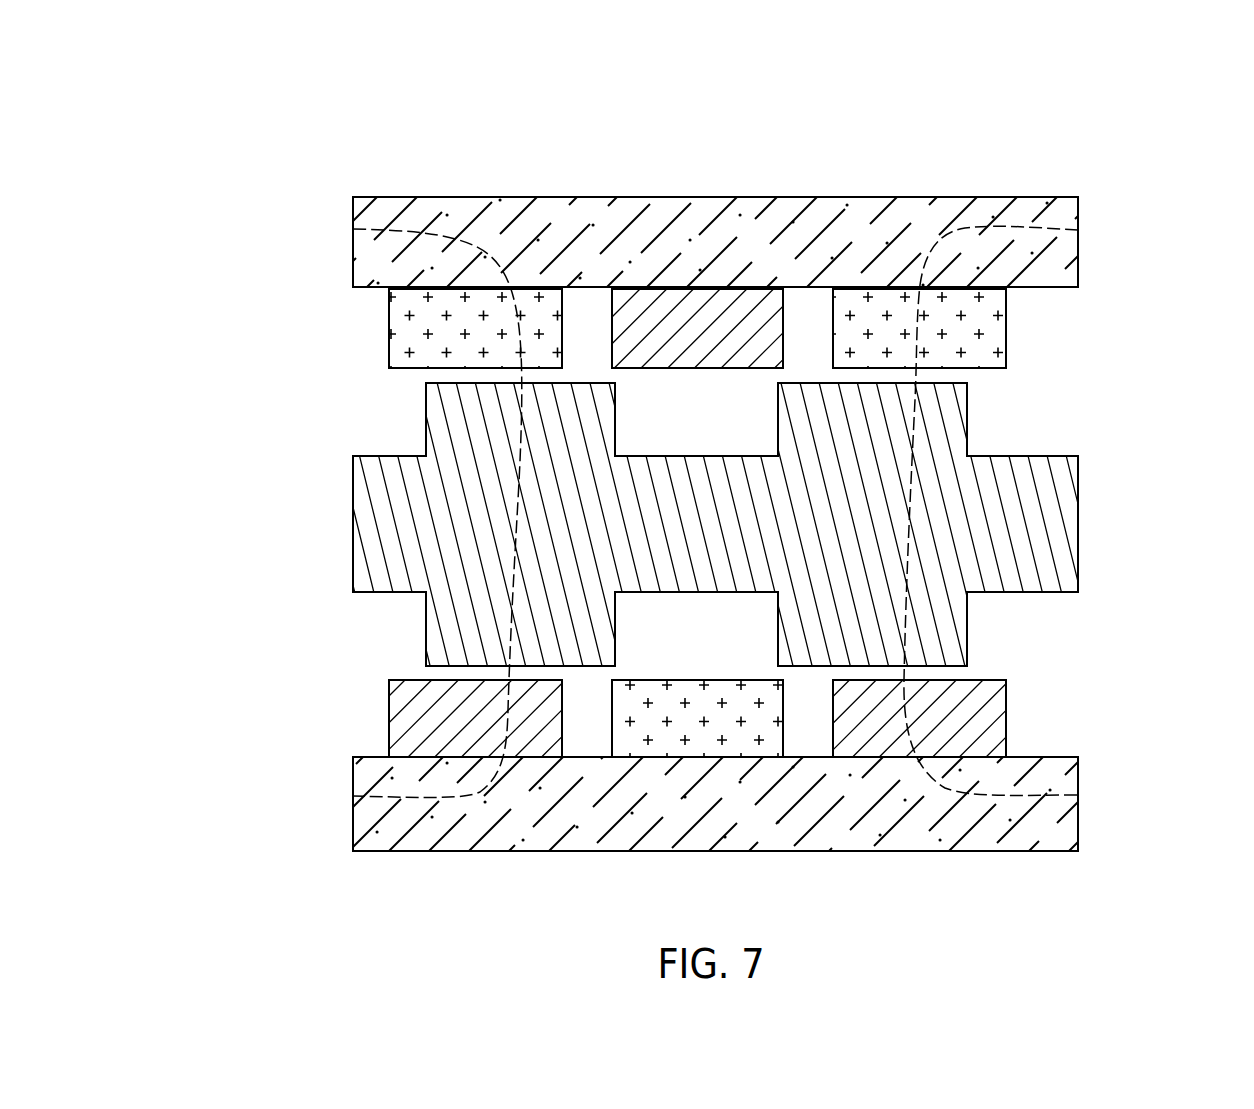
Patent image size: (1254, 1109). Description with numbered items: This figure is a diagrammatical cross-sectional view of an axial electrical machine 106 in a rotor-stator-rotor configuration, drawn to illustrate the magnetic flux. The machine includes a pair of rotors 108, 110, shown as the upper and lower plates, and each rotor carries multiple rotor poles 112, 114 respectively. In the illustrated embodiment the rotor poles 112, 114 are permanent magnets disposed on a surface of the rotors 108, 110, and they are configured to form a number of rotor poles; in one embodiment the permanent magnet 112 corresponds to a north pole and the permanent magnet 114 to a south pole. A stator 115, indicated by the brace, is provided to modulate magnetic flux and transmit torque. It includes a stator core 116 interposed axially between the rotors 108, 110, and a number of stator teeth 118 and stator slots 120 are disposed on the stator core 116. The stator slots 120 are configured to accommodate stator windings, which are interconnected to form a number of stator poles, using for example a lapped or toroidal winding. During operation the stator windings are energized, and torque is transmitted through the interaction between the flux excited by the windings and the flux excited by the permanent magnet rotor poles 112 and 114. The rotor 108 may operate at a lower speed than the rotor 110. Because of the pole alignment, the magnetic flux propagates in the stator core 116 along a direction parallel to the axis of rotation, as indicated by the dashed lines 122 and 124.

The axial electrical machine 106 is at (1122, 133).
The rotor 108 is at (353, 242).
The rotor 110 is at (353, 803).
The rotor poles 112 is at (696, 369).
The rotor poles 114 is at (389, 332).
The stator 115 is at (268, 383).
The stator core 116 is at (353, 524).
The stator teeth 118 is at (426, 420).
The stator slots 120 is at (706, 626).
The dashed line 122 is at (510, 736).
The dashed line 124 is at (925, 722).